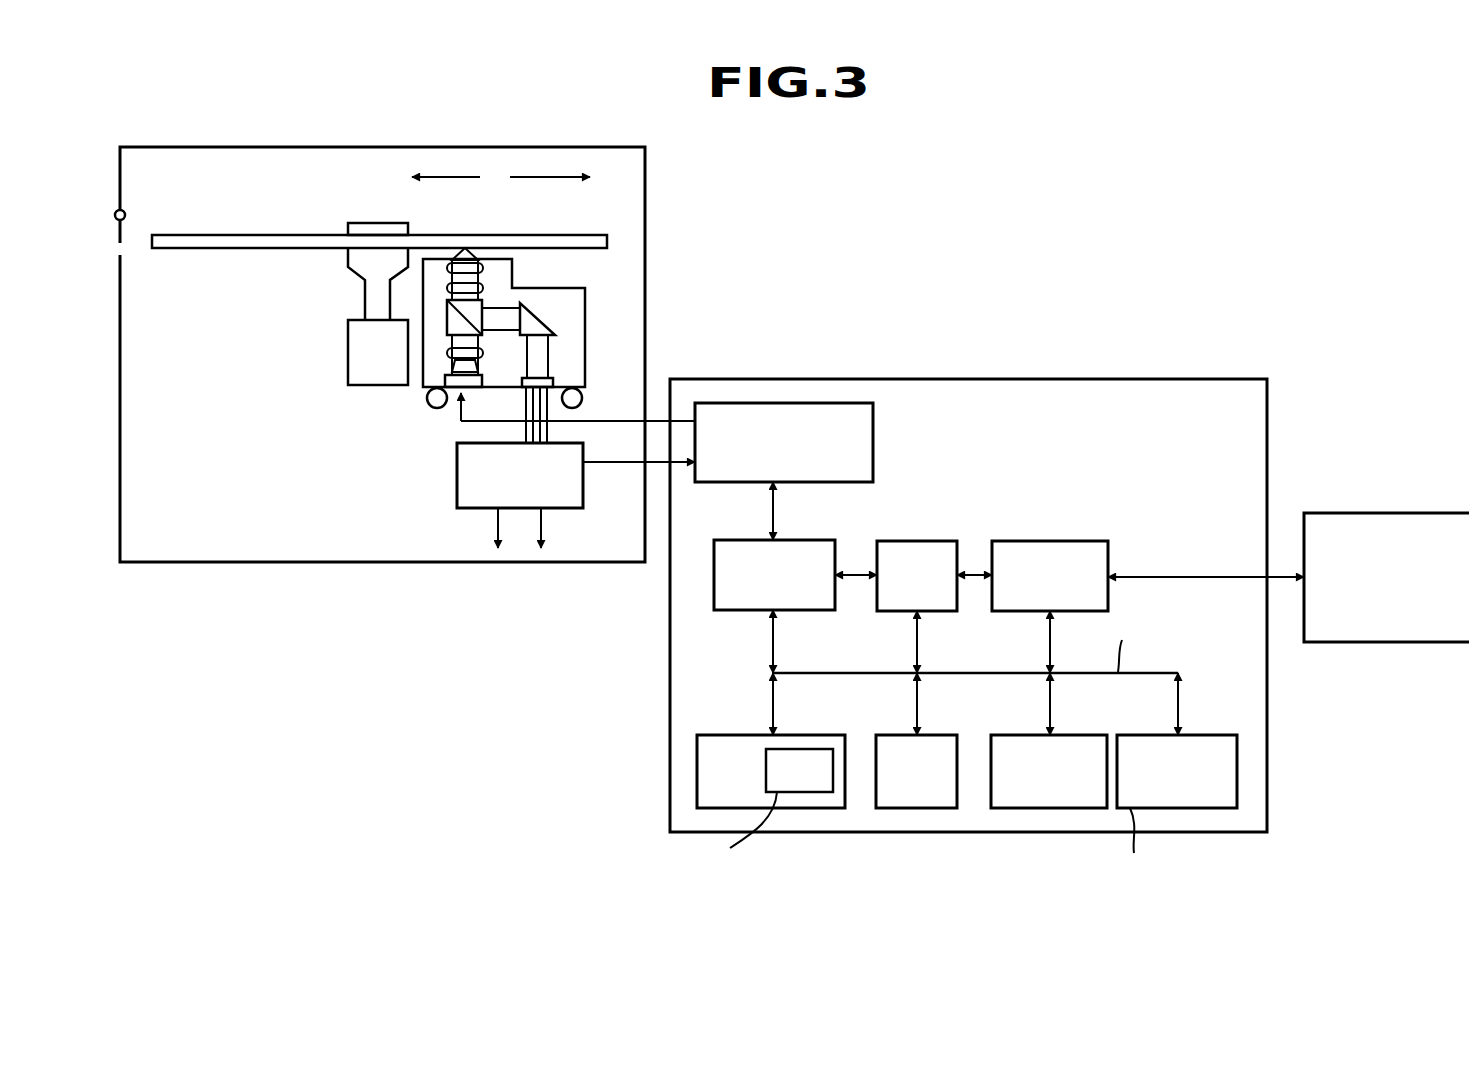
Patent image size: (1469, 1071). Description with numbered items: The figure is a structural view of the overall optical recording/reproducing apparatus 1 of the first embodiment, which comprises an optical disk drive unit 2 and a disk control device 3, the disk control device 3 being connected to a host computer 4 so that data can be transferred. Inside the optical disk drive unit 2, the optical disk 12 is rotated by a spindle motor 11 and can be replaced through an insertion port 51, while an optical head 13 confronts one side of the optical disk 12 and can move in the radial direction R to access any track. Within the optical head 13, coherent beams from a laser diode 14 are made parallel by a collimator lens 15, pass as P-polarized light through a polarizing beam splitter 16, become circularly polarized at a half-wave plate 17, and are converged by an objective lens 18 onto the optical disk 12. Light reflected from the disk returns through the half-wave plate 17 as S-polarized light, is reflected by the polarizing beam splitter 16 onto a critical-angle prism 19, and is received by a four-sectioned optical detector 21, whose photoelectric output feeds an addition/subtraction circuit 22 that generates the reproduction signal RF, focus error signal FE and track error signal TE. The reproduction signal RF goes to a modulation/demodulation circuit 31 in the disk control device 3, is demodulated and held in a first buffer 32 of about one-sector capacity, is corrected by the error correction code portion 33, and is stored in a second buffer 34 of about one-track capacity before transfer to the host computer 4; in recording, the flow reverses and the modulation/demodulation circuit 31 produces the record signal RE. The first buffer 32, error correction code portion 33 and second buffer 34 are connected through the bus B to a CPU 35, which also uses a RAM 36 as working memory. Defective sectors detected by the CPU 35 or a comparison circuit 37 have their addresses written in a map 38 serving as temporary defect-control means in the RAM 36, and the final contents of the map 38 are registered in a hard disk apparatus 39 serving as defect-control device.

The optical recording/reproducing apparatus 1 is at (858, 238).
The optical disk drive unit 2 is at (490, 147).
The disk control device 3 is at (1212, 379).
The host computer 4 is at (1415, 513).
The spindle motor 11 is at (350, 357).
The optical disk 12 is at (190, 235).
The optical head 13 is at (585, 297).
The laser diode 14 is at (452, 395).
The collimator lens 15 is at (480, 353).
The polarizing beam splitter 16 is at (447, 308).
The half-wave plate 17 is at (482, 285).
The objective lens 18 is at (472, 262).
The critical-angle prism 19 is at (547, 303).
The 4-sectioned optical detector 21 is at (557, 382).
The addition/subtraction circuit 22 is at (457, 492).
The modulation/demodulation circuit 31 is at (873, 420).
The first buffer 32 is at (800, 540).
The error correction code portion 33 is at (925, 541).
The second buffer 34 is at (1065, 541).
The CPU 35 is at (930, 735).
The RAM 36 is at (757, 735).
The comparison circuit 37 is at (1070, 735).
The map 38 is at (810, 749).
The hard disk apparatus 39 is at (1193, 735).
The insertion port 51 is at (112, 225).